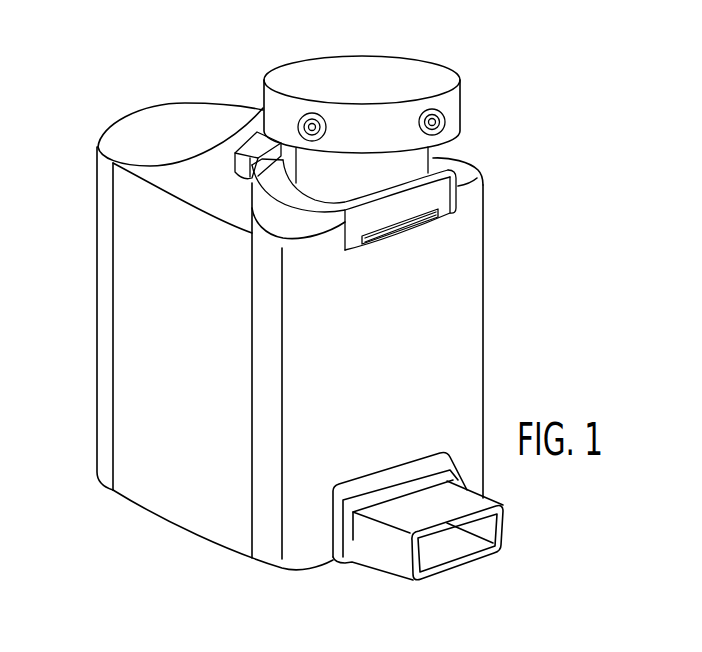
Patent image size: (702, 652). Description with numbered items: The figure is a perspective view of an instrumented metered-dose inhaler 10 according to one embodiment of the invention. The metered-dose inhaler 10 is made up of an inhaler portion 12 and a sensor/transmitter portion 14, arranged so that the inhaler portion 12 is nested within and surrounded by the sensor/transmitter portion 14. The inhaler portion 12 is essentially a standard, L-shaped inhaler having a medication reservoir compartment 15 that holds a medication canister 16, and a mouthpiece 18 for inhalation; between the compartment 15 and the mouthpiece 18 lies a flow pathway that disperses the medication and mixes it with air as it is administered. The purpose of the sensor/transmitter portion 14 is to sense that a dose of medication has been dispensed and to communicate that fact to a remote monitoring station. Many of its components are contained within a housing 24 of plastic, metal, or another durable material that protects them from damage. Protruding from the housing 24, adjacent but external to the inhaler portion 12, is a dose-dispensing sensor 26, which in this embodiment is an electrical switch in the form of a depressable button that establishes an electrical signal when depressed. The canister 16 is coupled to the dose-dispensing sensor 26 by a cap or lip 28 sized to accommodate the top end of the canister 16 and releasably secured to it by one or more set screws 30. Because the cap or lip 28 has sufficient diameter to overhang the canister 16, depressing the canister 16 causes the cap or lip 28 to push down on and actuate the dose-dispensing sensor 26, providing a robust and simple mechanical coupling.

The instrumented metered-dose inhaler 10 is at (484, 59).
The inhaler portion 12 is at (412, 205).
The sensor/transmitter portion 14 is at (128, 104).
The medication reservoir compartment 15 is at (252, 192).
The medication canister 16 is at (412, 166).
The mouthpiece 18 is at (415, 502).
The housing 24 is at (107, 250).
The dose-dispensing sensor 26 is at (250, 147).
The cap or lip 28 is at (392, 68).
The set screws 30 is at (317, 118).